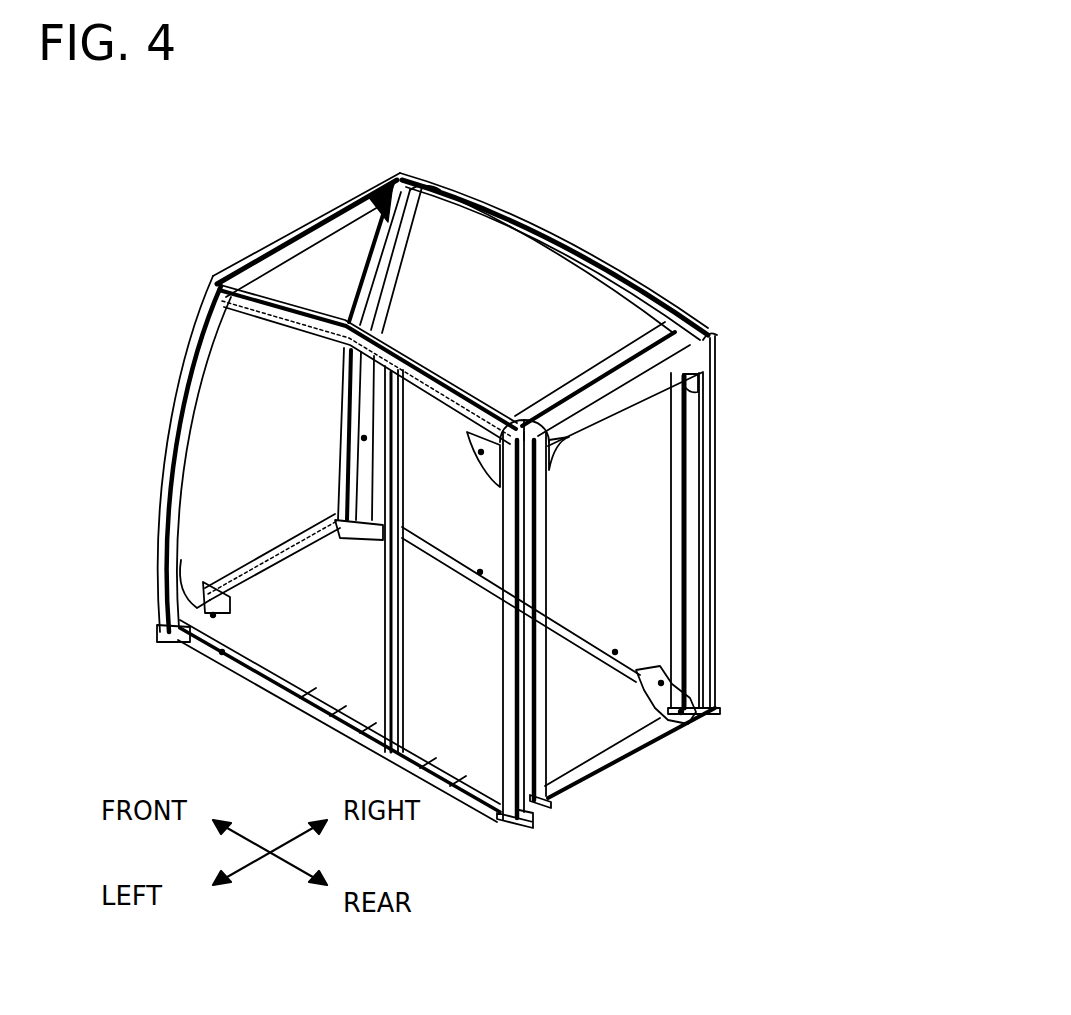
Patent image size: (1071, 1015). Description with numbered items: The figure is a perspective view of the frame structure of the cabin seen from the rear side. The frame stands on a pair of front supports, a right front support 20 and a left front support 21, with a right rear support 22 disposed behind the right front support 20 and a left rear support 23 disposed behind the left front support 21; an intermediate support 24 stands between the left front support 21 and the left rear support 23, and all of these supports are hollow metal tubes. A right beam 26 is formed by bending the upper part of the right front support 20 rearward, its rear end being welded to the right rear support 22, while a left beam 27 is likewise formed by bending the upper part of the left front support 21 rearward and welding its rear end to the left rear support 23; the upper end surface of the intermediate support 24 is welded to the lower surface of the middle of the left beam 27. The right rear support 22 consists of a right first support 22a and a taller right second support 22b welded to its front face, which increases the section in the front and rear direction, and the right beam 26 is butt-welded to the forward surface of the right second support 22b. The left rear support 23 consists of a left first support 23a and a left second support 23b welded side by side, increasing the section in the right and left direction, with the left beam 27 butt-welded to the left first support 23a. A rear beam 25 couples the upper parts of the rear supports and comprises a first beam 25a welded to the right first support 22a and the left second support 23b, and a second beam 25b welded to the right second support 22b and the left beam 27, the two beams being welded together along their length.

The right front support 20 is at (362, 446).
The left front support 21 is at (167, 457).
The right rear support 22 is at (780, 162).
The right first support 22a is at (712, 332).
The right second support 22b is at (690, 322).
The left rear support 23 is at (637, 948).
The left first support 23a is at (507, 824).
The left second support 23b is at (543, 779).
The intermediate support 24 is at (383, 650).
The rear beam 25 is at (882, 345).
The first beam 25a is at (620, 400).
The second beam 25b is at (700, 374).
The right beam 26 is at (487, 207).
The left beam 27 is at (347, 321).